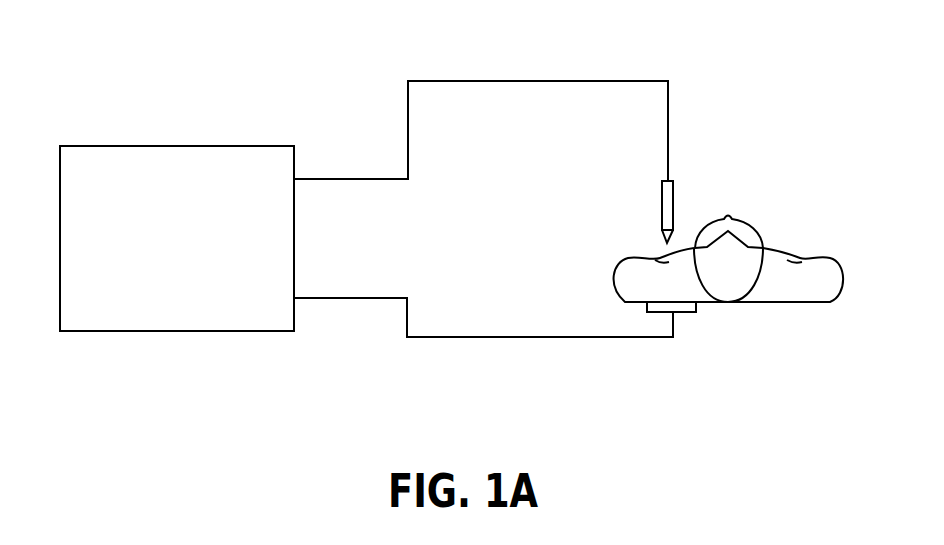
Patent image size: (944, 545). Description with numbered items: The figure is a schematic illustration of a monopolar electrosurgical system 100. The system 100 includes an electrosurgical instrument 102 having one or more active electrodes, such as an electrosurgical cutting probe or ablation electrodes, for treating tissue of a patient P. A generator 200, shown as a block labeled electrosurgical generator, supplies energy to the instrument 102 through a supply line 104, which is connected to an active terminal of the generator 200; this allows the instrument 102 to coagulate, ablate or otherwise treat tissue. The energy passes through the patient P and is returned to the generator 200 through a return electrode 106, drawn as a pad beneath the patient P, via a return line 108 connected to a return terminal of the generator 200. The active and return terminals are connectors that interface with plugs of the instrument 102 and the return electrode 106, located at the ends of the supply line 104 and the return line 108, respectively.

The monopolar electrosurgical system 100 is at (293, 50).
The generator 200 is at (110, 146).
The supply line 104 is at (537, 81).
The electrosurgical instrument 102 is at (659, 211).
The return electrode 106 is at (688, 313).
The return line 108 is at (553, 337).
The patient P is at (805, 248).